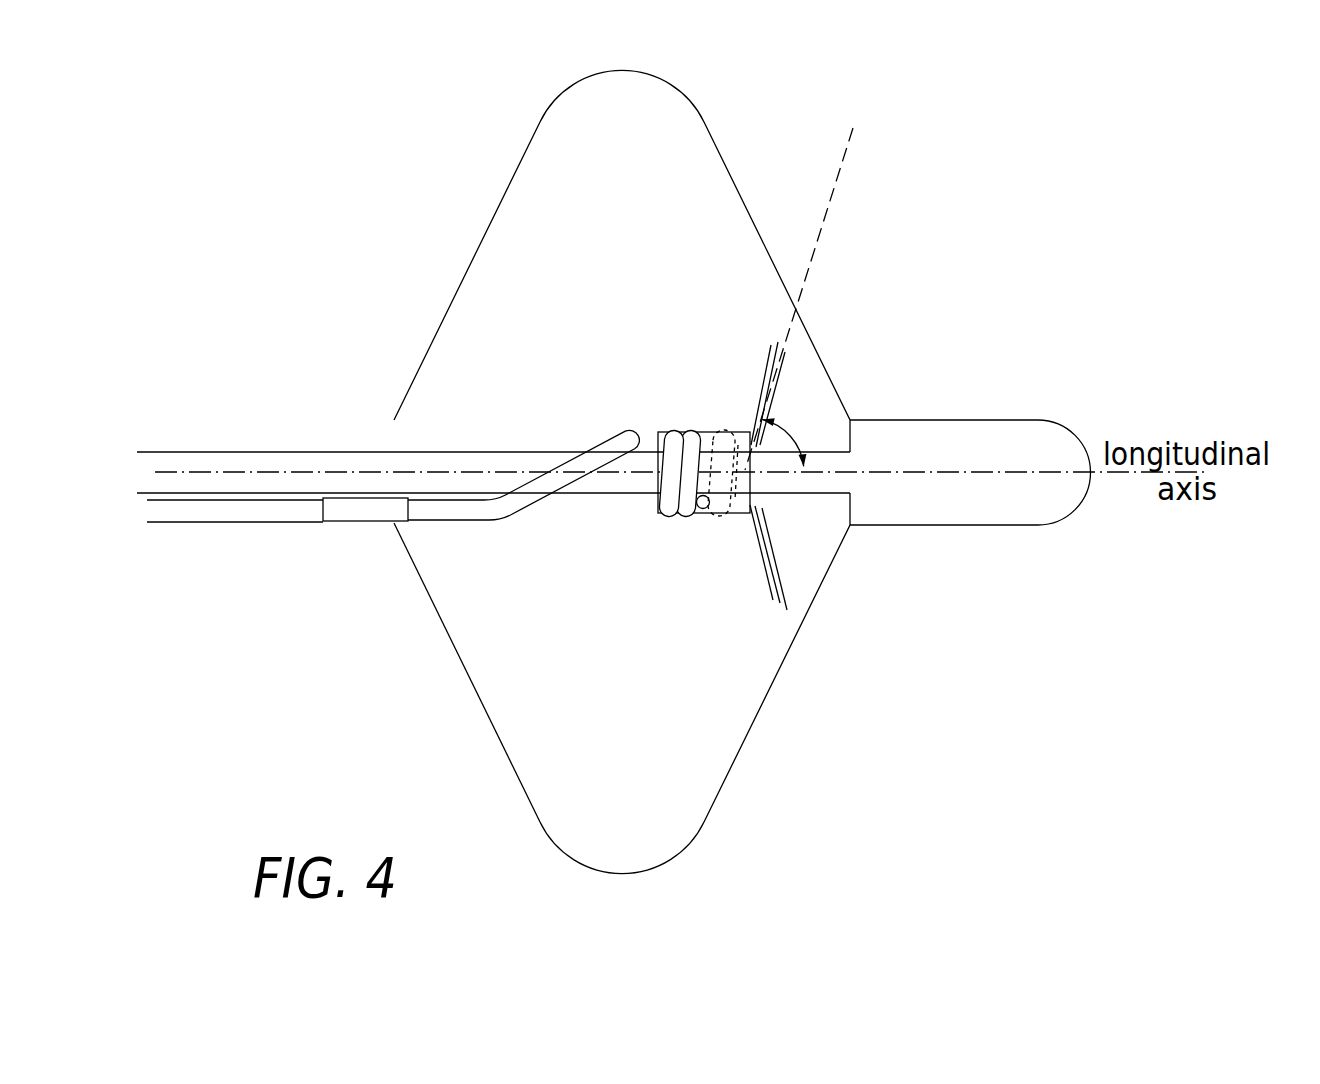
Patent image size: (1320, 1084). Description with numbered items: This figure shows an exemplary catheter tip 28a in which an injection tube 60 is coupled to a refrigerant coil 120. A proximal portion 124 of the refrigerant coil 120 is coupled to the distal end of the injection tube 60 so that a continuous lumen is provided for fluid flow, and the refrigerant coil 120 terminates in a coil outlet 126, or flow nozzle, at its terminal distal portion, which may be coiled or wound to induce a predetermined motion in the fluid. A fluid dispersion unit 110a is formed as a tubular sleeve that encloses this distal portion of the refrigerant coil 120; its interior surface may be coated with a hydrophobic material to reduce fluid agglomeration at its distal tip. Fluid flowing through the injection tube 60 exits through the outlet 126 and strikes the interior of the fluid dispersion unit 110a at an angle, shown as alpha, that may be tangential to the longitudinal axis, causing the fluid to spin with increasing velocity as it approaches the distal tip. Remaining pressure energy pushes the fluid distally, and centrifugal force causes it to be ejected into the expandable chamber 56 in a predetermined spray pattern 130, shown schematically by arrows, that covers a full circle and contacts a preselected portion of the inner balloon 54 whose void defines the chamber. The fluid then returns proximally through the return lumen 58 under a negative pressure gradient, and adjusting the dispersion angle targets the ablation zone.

The catheter tip 28a is at (693, 502).
The inner balloon 54 is at (622, 874).
The expandable chamber 56 is at (742, 502).
The return lumen 58 is at (166, 453).
The injection tube 60 is at (217, 525).
The refrigerant coil 120 is at (553, 465).
The proximal portion of the refrigerant coil 124 is at (372, 512).
The coil outlet 126 is at (662, 536).
The fluid dispersion unit 110a is at (725, 532).
The spray pattern 130 is at (782, 370).